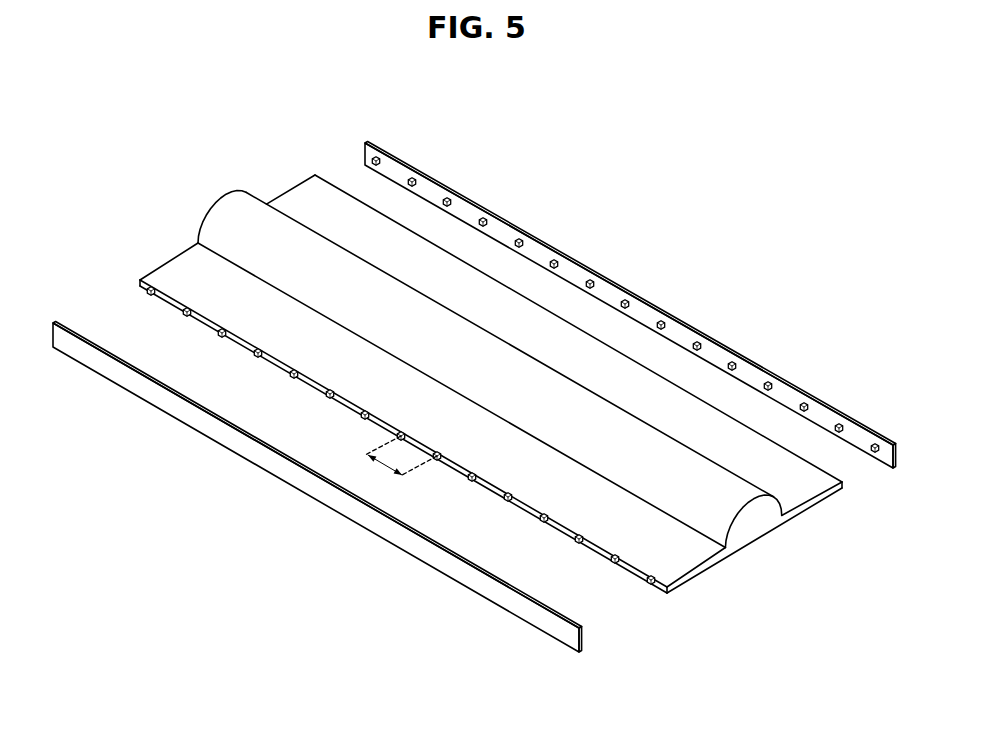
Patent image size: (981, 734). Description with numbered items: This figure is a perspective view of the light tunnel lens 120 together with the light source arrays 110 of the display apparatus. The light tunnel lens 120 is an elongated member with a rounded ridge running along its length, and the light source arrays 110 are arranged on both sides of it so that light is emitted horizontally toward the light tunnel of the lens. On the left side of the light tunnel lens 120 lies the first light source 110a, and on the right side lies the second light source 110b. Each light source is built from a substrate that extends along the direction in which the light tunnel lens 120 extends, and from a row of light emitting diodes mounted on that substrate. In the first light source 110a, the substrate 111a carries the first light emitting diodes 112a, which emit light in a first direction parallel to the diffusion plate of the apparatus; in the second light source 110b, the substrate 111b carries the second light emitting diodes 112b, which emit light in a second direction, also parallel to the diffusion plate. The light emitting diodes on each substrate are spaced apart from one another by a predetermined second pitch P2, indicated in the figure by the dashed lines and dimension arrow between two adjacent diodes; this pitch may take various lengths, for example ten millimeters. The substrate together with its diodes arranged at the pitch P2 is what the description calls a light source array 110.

The light source array 110 is at (475, 436).
The first light source 110a is at (386, 491).
The second light source 110b is at (631, 421).
The substrate 111a is at (582, 633).
The first light emitting diode 112a is at (650, 583).
The substrate 111b is at (839, 431).
The second light emitting diode 112b is at (885, 458).
The light tunnel lens 120 is at (236, 166).
The second pitch P2 is at (397, 461).